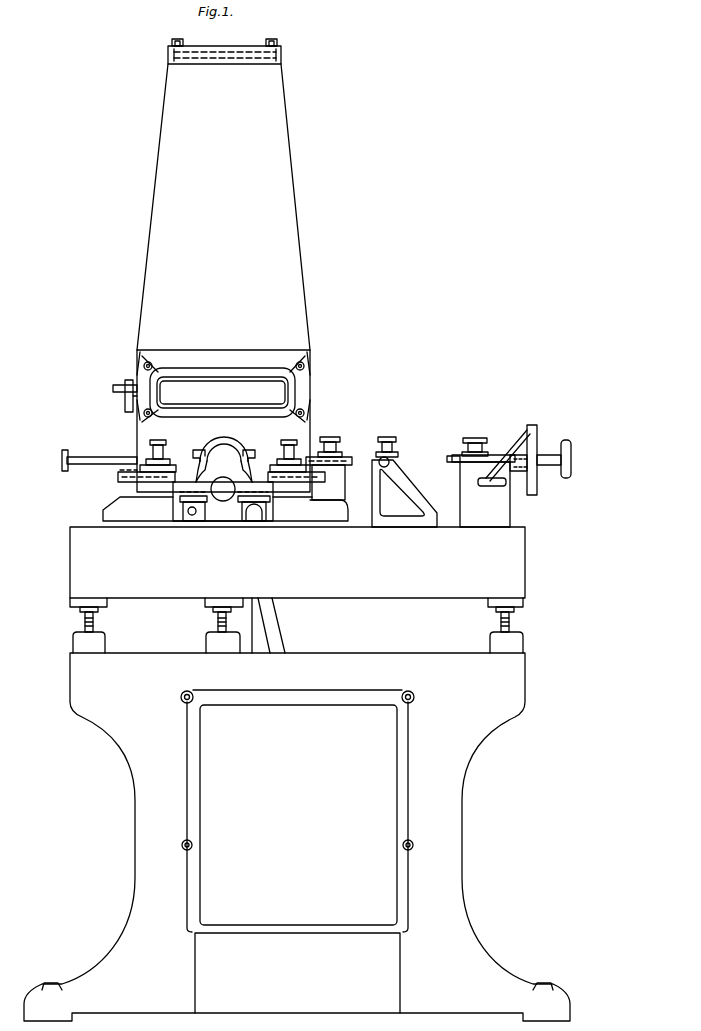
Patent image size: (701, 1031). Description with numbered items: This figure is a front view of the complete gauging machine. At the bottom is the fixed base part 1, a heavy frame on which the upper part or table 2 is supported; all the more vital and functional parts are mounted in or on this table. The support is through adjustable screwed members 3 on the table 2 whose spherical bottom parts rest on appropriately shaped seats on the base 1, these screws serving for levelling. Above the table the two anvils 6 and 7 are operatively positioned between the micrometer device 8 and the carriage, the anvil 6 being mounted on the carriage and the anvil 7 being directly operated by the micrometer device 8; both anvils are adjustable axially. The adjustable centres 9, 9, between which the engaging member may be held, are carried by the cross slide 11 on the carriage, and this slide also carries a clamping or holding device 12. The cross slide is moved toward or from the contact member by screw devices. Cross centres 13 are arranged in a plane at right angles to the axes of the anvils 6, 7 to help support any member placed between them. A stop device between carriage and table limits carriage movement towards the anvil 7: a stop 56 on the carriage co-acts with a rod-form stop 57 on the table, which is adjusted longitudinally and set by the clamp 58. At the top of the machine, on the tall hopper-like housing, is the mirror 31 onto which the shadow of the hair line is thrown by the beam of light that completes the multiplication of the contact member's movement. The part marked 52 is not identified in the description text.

The fixed base part 1 is at (297, 837).
The table 2 is at (297, 590).
The adjustable screwed members 3 is at (97, 626).
The anvil 6 is at (358, 428).
The anvil 7 is at (447, 455).
The micrometer device 8 is at (557, 455).
The adjustable centres 9 is at (177, 470).
The cross slide 11 is at (114, 465).
The clamping or holding device 12 is at (256, 463).
The cross centres 13 is at (382, 456).
The mirror 31 is at (222, 54).
The lever 52 is at (527, 440).
The stop 56 is at (197, 520).
The stop 57 is at (243, 520).
The clamp 58 is at (262, 520).